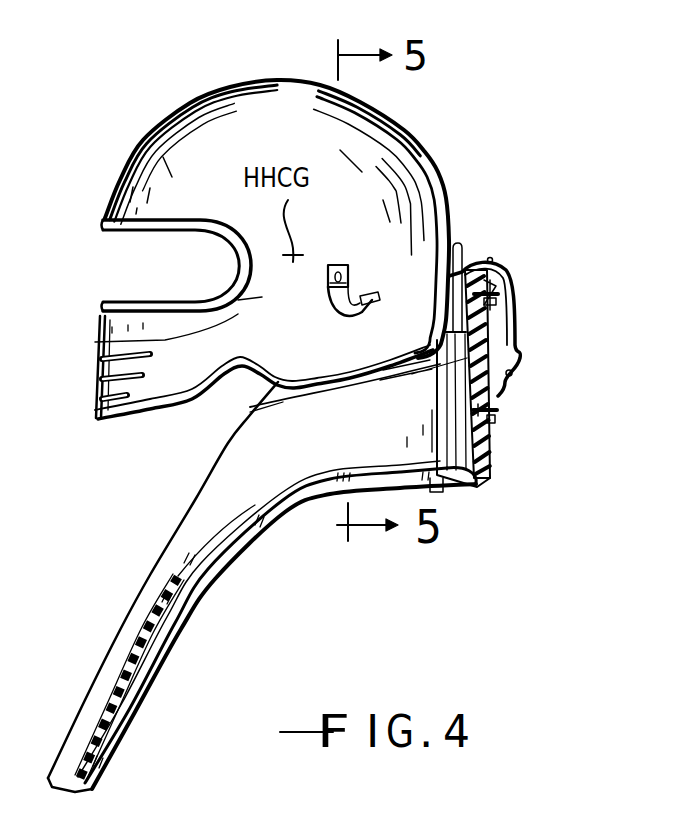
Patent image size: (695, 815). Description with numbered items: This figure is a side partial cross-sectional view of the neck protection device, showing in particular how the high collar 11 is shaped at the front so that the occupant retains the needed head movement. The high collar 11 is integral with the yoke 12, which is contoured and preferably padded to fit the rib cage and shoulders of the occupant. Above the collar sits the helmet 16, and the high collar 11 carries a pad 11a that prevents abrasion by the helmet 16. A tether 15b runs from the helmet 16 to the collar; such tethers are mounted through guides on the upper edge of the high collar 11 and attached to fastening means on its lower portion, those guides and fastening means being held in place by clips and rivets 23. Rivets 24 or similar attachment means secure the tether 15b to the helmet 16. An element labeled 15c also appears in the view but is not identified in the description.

The high collar 11 is at (440, 358).
The pad 11a is at (472, 268).
The yoke 12 is at (247, 467).
The tether 15b is at (476, 266).
The hook member 15c is at (345, 325).
The helmet 16 is at (244, 98).
The rivets 23 is at (500, 292).
The rivets 24 is at (328, 283).